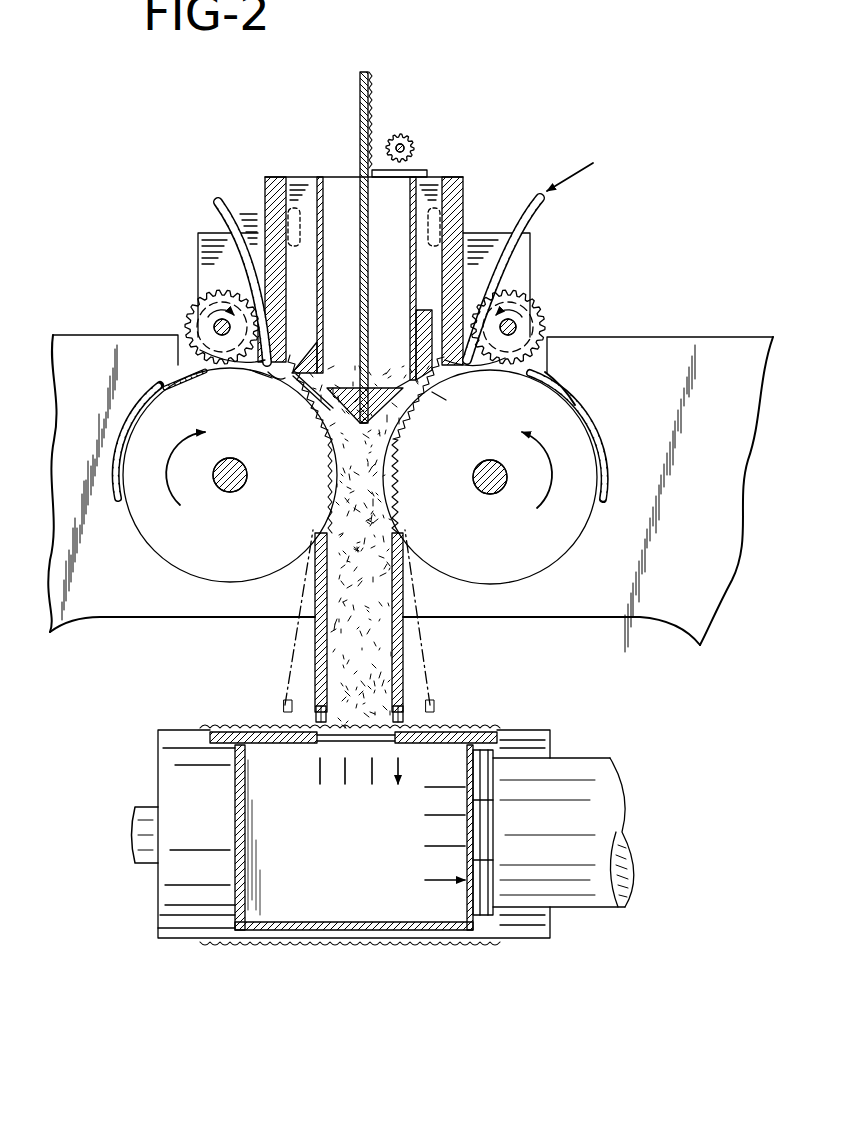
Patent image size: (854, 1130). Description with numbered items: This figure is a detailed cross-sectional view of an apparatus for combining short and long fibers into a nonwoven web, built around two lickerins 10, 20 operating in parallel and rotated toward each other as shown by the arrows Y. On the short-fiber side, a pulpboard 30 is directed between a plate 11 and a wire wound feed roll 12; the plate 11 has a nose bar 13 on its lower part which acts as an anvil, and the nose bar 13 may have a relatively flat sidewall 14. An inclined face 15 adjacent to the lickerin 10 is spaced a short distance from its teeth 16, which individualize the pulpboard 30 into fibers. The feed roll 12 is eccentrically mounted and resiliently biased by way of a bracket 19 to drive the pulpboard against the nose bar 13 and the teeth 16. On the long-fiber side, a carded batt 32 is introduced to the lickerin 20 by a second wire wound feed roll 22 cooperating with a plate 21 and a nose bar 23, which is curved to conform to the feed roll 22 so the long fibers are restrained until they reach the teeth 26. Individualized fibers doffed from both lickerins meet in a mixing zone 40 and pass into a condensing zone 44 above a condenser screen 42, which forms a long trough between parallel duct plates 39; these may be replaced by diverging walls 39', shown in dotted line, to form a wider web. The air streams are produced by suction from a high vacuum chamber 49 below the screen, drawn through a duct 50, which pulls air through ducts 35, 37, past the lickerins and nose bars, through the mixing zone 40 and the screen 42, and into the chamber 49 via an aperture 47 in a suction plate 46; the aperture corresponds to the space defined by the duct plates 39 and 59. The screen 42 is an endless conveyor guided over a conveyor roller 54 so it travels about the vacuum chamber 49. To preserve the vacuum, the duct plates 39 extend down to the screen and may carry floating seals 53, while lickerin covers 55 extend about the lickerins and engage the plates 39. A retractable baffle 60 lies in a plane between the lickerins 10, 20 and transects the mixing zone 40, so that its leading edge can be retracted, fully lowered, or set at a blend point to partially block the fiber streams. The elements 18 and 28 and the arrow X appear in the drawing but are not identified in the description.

The lickerin 10 is at (122, 412).
The plate 11 is at (270, 180).
The wire wound feed roll 12 is at (188, 318).
The nose bar 13 is at (258, 372).
The sidewall 14 is at (228, 358).
The inclined face 15 is at (272, 378).
The teeth 16 is at (178, 378).
The inner tube wall 18 is at (302, 294).
The bracket 19 is at (215, 268).
The lickerin 20 is at (617, 482).
The plate 21 is at (464, 180).
The second wire wound feed roll 22 is at (540, 318).
The nose bar 23 is at (495, 362).
The teeth 26 is at (566, 395).
The inner tube wall 28 is at (434, 260).
The pulpboard 30 is at (218, 209).
The carded batt 32 is at (542, 215).
The duct 35 is at (295, 398).
The duct 37 is at (440, 392).
The duct plates 39 is at (360, 622).
The diverging walls 39' is at (358, 621).
The mixing zone 40 is at (370, 485).
The condenser screen 42 is at (498, 727).
The condensing zone 44 is at (362, 746).
The suction plate 46 is at (400, 743).
The aperture 47 is at (320, 744).
The high vacuum chamber 49 is at (373, 879).
The duct 50 is at (633, 846).
The floating seals 53 is at (316, 718).
The conveyor roller 54 is at (172, 795).
The lickerin covers 55 is at (116, 455).
The duct plates 59 is at (741, 358).
The retractable baffle 60 is at (358, 98).
The feed direction X is at (209, 197).
The arrows Y is at (172, 475).